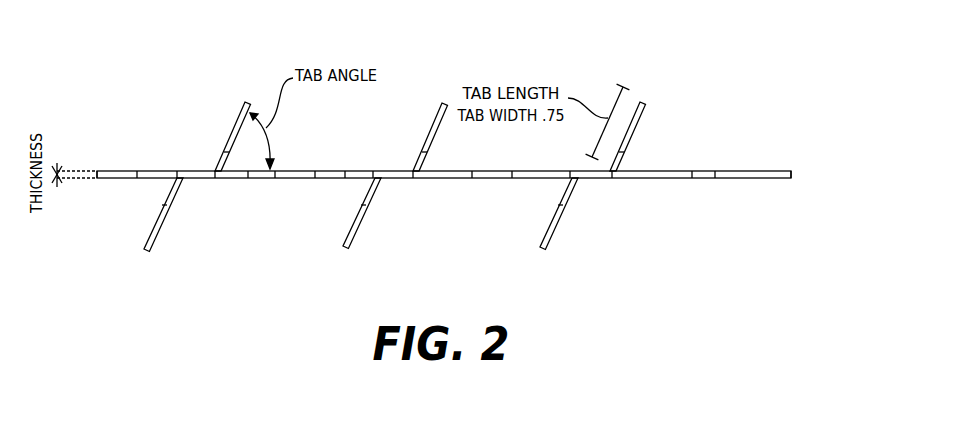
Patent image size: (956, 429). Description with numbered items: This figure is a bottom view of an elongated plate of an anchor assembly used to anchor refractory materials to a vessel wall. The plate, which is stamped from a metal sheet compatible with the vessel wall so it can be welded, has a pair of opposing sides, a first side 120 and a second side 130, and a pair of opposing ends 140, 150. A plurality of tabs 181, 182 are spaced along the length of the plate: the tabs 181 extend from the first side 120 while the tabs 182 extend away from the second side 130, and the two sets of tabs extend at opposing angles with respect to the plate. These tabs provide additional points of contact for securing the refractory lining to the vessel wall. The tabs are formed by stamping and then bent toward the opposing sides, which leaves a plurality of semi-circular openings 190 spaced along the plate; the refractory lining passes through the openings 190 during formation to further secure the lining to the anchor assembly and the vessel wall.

The first side 120 is at (296, 171).
The second side 130 is at (493, 178).
The end 140 is at (791, 178).
The end 150 is at (97, 178).
The tab 181 is at (246, 100).
The tab 182 is at (153, 237).
The opening 190 is at (137, 171).